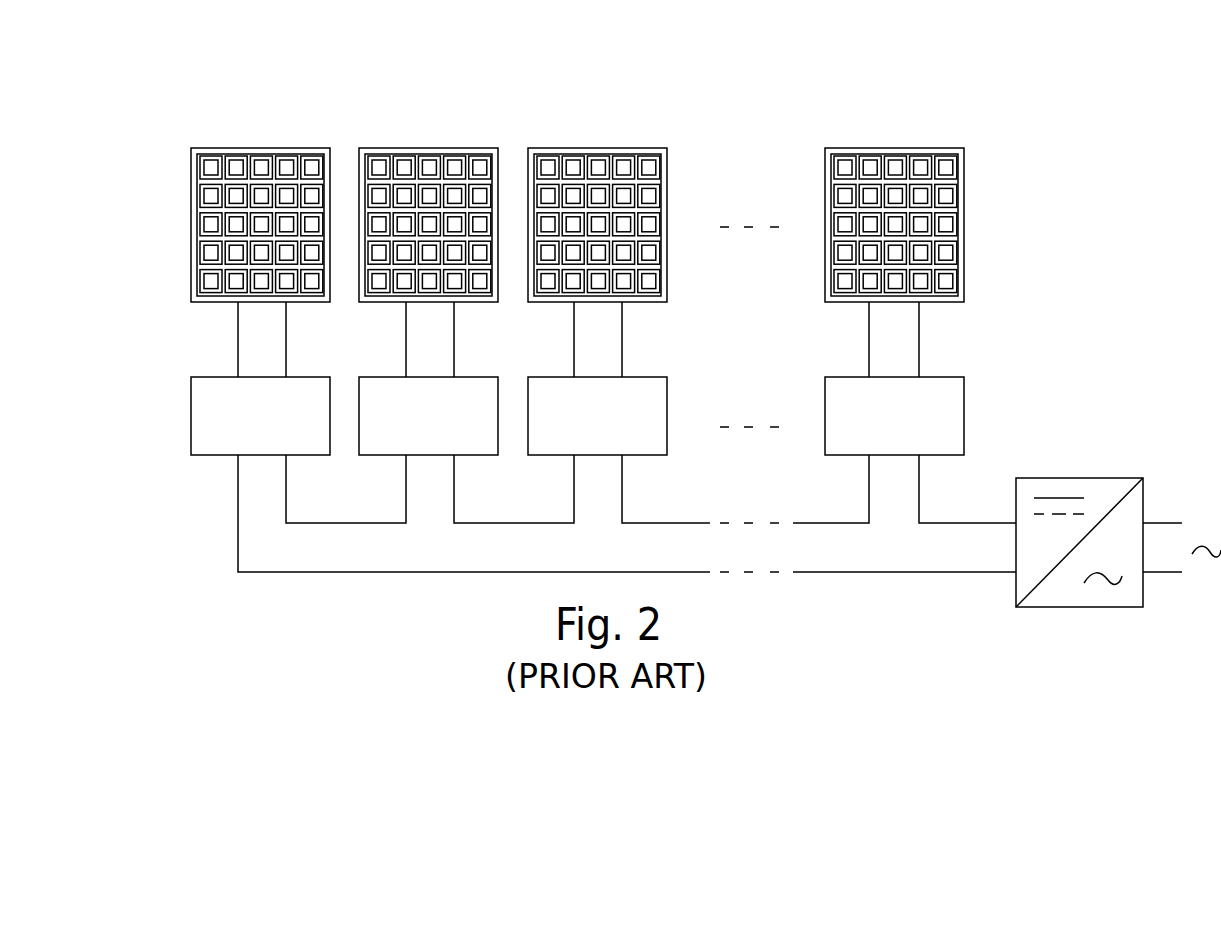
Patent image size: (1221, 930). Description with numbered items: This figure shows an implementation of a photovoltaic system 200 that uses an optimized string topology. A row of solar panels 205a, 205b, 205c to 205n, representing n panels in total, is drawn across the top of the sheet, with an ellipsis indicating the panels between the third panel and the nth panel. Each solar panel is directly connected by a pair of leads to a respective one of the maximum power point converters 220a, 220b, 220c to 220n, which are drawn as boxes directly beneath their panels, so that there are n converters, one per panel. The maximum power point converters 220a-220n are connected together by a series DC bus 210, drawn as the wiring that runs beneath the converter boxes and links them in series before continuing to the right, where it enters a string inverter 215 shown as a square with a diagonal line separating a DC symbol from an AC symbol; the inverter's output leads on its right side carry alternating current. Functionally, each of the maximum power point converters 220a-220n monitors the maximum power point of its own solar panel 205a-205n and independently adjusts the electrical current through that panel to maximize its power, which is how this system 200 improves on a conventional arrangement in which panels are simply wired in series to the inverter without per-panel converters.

The photovoltaic system 200 is at (219, 74).
The solar panel 205a is at (253, 148).
The solar panel 205b is at (424, 148).
The solar panel 205c is at (594, 148).
The solar panel 205n is at (911, 148).
The maximum power point converter 220a is at (205, 377).
The maximum power point converter 220b is at (384, 377).
The maximum power point converter 220c is at (552, 377).
The maximum power point converter 220n is at (946, 377).
The series DC bus 210 is at (328, 575).
The string inverter 215 is at (1093, 478).